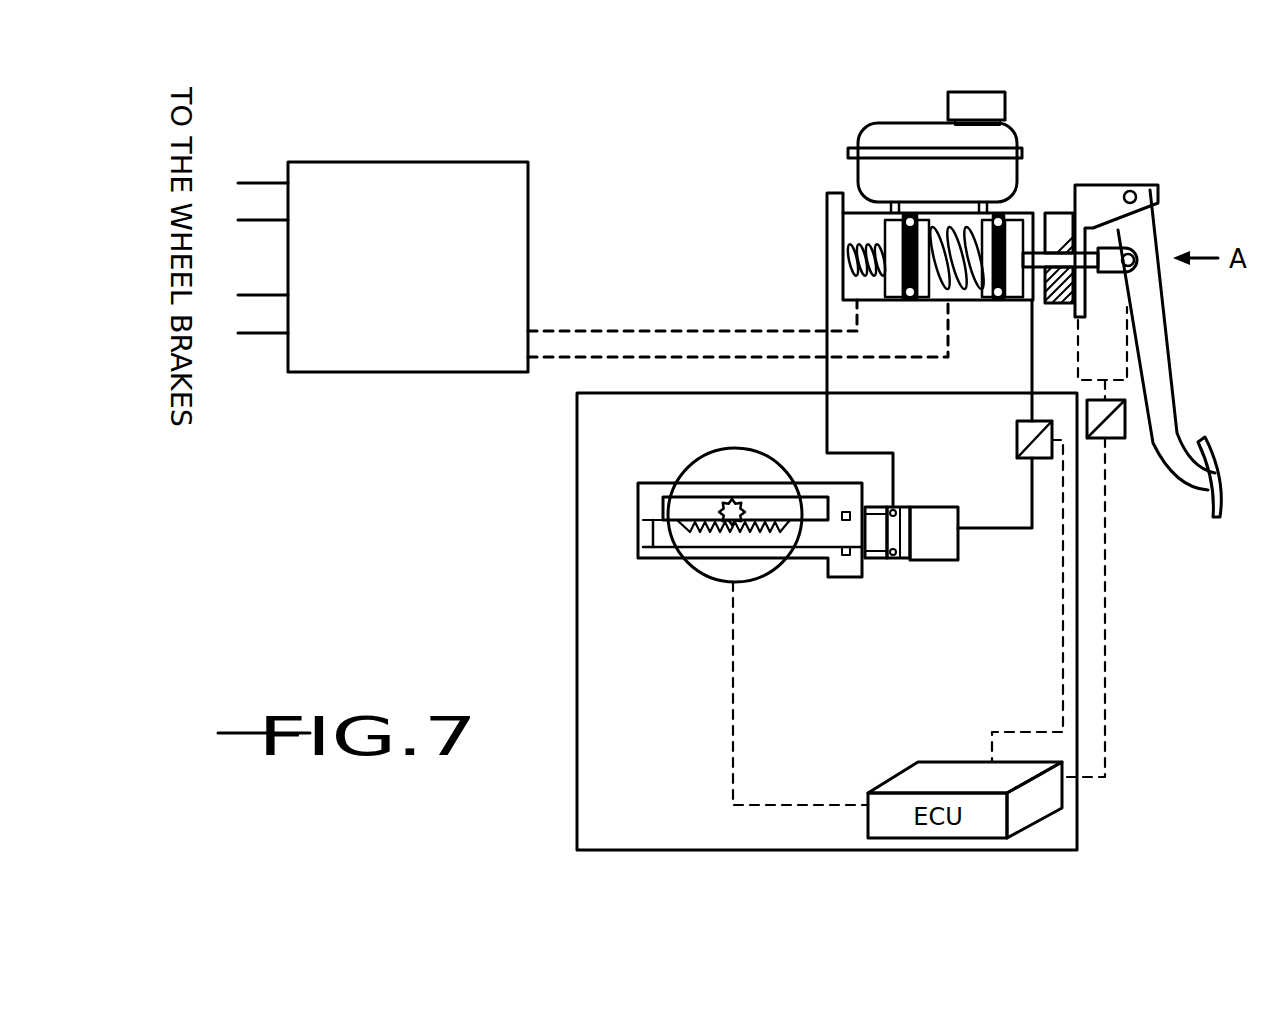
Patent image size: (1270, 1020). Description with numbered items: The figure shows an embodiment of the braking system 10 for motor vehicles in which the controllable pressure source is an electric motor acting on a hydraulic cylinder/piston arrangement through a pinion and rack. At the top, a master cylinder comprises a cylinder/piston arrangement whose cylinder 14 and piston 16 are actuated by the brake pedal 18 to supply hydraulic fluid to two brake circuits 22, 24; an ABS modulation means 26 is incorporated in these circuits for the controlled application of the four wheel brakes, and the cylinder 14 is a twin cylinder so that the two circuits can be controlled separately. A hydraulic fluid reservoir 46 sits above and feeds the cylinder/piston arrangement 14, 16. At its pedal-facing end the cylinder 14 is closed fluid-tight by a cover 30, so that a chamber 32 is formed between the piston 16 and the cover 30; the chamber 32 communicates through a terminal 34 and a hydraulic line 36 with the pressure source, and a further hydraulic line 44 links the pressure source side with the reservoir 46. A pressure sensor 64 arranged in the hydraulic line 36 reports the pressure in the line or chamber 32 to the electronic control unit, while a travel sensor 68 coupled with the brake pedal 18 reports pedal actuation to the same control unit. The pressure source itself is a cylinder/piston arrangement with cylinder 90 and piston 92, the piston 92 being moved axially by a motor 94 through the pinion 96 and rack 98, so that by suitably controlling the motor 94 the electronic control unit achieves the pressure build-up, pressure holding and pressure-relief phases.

The braking system 10 is at (1132, 611).
The cylinder 14 is at (880, 303).
The piston 16 is at (975, 263).
The brake pedal 18 is at (1150, 343).
The brake circuit 22 is at (543, 330).
The brake circuit 24 is at (545, 357).
The ABS modulation means 26 is at (528, 200).
The cover 30 is at (1057, 217).
The chamber 32 is at (1042, 220).
The terminal 34 is at (1030, 307).
The hydraulic line 36 is at (1032, 377).
The hydraulic line 44 is at (825, 417).
The hydraulic fluid reservoir 46 is at (913, 135).
The pressure sensor 64 is at (1017, 432).
The travel sensor 68 is at (1120, 440).
The cylinder 90 is at (903, 507).
The piston 92 is at (873, 548).
The motor 94 is at (697, 577).
The pinion 96 is at (745, 520).
The rack 98 is at (808, 537).